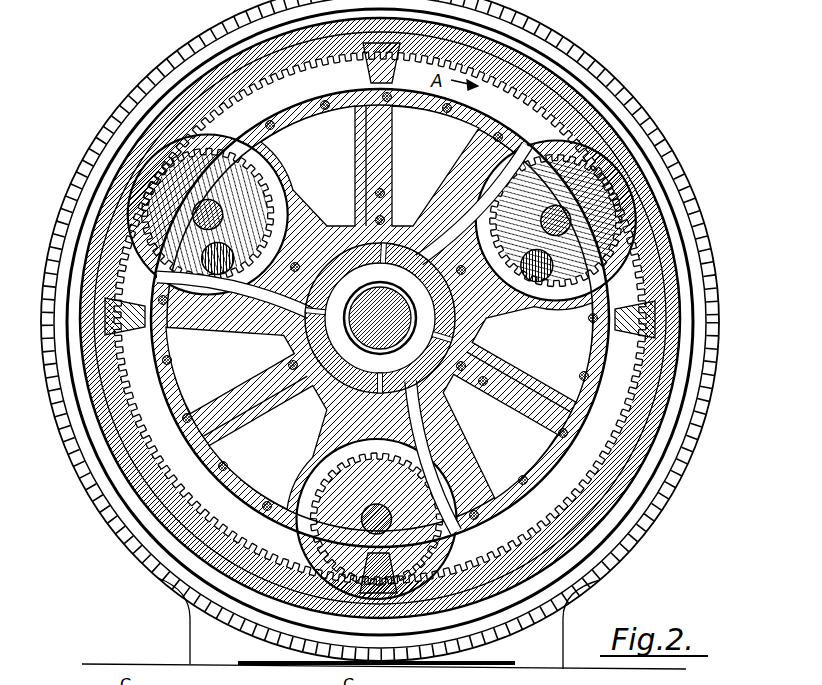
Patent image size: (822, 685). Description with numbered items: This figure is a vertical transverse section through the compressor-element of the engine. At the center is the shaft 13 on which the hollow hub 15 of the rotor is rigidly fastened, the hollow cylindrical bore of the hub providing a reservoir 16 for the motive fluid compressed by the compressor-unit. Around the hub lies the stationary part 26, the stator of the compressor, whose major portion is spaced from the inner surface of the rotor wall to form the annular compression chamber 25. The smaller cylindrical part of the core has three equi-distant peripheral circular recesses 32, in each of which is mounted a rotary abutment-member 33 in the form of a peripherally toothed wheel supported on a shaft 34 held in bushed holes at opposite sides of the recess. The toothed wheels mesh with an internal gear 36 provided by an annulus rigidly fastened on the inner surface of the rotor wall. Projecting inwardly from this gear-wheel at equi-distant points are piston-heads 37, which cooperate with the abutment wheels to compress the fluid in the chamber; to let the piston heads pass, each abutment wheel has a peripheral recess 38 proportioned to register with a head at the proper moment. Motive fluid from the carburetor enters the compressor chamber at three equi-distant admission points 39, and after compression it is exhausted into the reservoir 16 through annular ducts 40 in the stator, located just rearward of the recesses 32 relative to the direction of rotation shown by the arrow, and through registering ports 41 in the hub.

The shaft 13 is at (380, 318).
The hollow hub 15 is at (362, 338).
The reservoir 16 is at (384, 262).
The annular compression chamber 25 is at (516, 108).
The stationary part 26 is at (598, 405).
The peripheral recesses 32 is at (288, 183).
The rotary abutment-members 33 is at (594, 203).
The shafts 34 is at (213, 213).
The internal gear 36 is at (143, 172).
The piston-heads 37 is at (368, 64).
The peripheral recesses 38 is at (227, 267).
The admission points 39 is at (218, 140).
The annular ducts 40 is at (243, 307).
The ports 41 is at (408, 228).